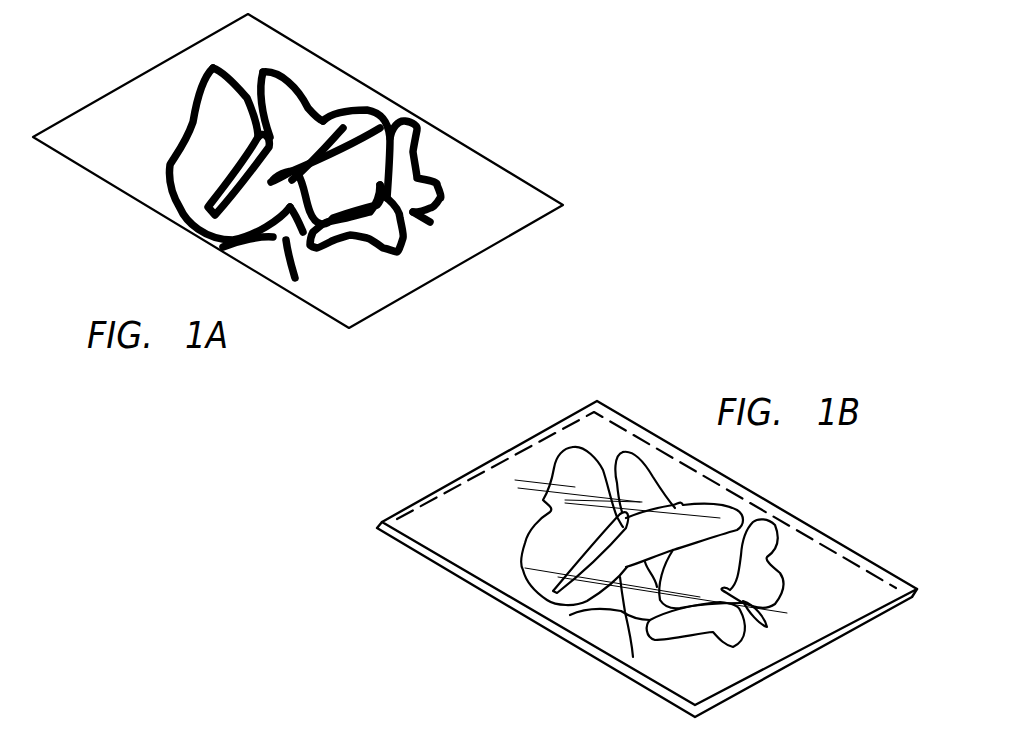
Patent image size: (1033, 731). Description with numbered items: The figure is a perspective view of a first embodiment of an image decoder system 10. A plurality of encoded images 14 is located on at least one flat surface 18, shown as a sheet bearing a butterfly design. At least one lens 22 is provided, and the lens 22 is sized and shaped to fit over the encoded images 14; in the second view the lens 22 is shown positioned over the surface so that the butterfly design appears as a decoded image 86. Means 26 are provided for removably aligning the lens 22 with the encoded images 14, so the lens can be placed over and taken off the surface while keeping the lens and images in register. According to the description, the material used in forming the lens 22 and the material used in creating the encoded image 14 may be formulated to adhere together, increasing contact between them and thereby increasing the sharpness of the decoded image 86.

In FIG. 1B, the image decoder system 10 is at (678, 392).
In FIG. 1A, the encoded images 14 is at (423, 152).
In FIG. 1A, the flat surface 18 is at (440, 262).
In FIG. 1B, the lens 22 is at (443, 517).
In FIG. 1B, the means for removably aligning 26 is at (822, 645).
In FIG. 1B, the decoded image 86 is at (780, 557).